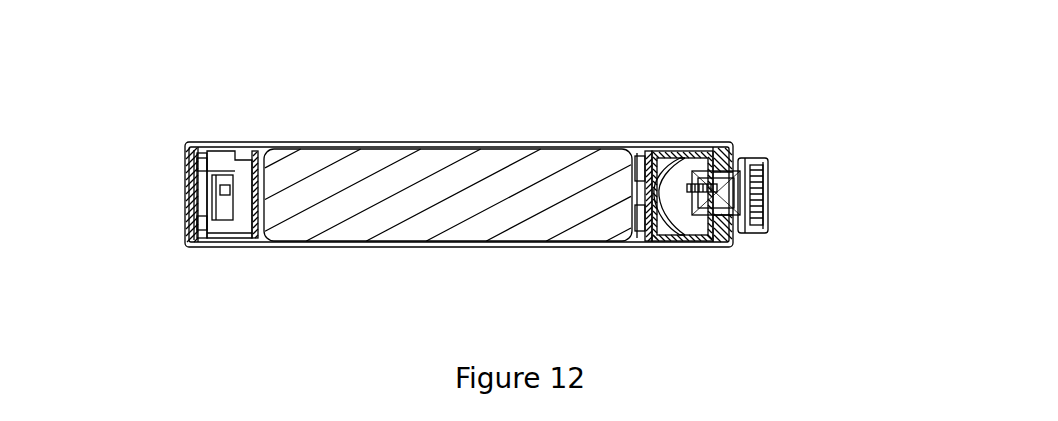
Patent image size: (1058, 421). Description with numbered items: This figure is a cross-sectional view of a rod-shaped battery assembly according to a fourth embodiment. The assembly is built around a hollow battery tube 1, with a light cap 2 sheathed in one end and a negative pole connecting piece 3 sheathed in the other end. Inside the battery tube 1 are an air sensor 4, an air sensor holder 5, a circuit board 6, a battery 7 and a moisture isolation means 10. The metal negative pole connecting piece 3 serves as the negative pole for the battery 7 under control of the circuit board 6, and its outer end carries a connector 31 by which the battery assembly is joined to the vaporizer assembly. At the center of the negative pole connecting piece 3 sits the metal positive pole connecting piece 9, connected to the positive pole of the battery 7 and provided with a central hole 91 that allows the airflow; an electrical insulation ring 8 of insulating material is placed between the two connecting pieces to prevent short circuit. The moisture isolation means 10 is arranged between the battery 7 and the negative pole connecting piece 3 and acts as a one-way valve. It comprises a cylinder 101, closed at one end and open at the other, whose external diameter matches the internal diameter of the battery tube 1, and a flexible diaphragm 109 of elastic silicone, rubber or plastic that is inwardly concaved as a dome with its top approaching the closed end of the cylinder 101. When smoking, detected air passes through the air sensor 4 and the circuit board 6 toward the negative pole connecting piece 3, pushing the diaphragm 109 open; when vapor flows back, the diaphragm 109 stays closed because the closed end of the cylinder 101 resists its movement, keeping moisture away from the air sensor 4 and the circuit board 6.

The battery tube 1 is at (387, 147).
The light cap 2 is at (142, 165).
The negative pole connecting piece 3 is at (730, 147).
The air sensor 4 is at (221, 183).
The air sensor holder 5 is at (211, 132).
The circuit board 6 is at (258, 190).
The battery 7 is at (427, 192).
The electrical insulation ring 8 is at (773, 168).
The positive pole connecting piece 9 is at (740, 208).
The moisture isolation means 10 is at (603, 136).
The connector 31 is at (748, 235).
The central hole 91 is at (743, 192).
The cylinder 101 is at (647, 153).
The flexible diaphragm 109 is at (673, 208).